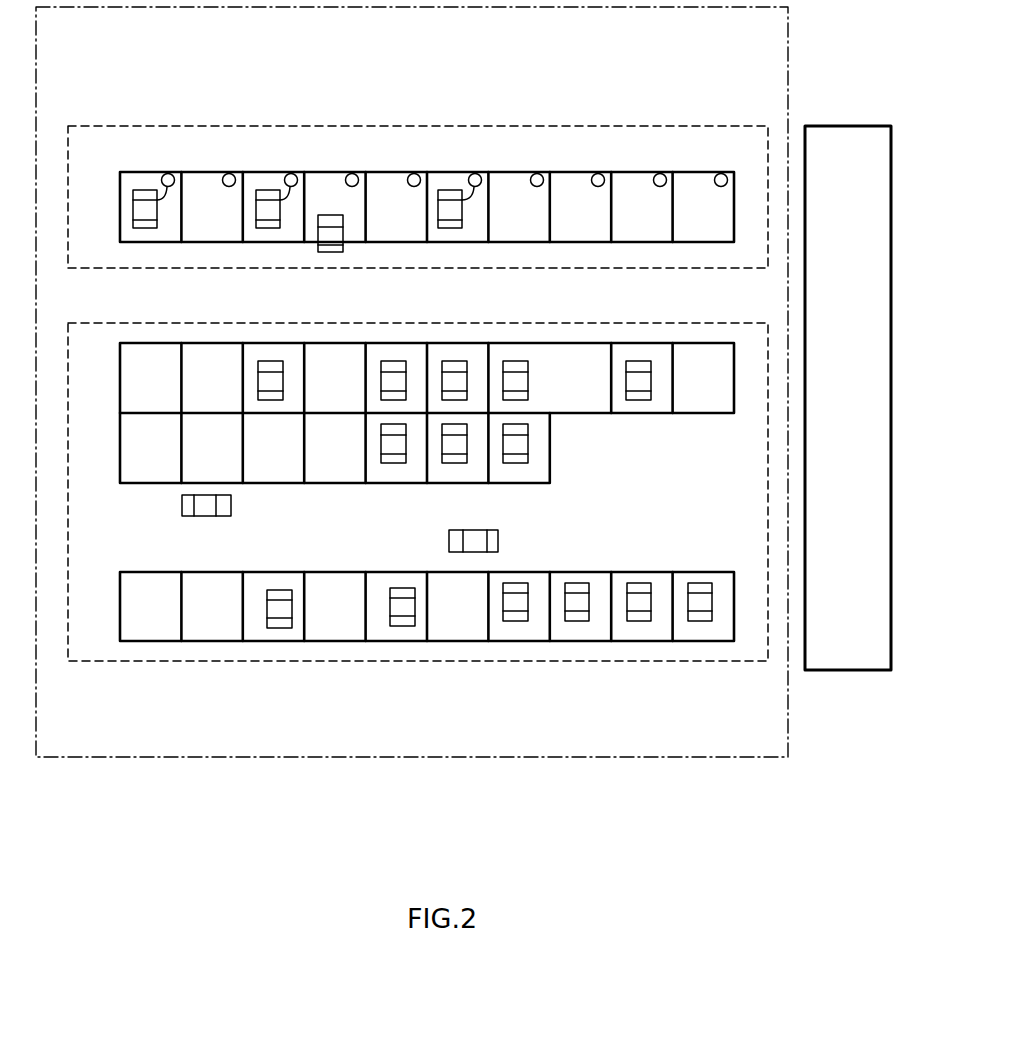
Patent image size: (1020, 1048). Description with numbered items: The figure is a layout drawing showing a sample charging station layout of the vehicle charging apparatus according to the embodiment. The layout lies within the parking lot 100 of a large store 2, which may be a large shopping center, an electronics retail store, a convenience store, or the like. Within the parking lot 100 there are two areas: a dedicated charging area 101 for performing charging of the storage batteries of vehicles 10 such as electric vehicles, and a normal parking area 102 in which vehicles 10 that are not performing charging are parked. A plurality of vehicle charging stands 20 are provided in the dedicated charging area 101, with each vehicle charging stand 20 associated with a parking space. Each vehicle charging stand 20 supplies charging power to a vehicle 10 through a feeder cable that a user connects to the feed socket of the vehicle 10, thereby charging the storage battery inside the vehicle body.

The large store 2 is at (843, 123).
The vehicle 10 is at (145, 212).
The vehicle charging stand 20 is at (167, 175).
The parking lot 100 is at (415, 758).
The dedicated charging area 101 is at (590, 127).
The normal parking area 102 is at (573, 662).